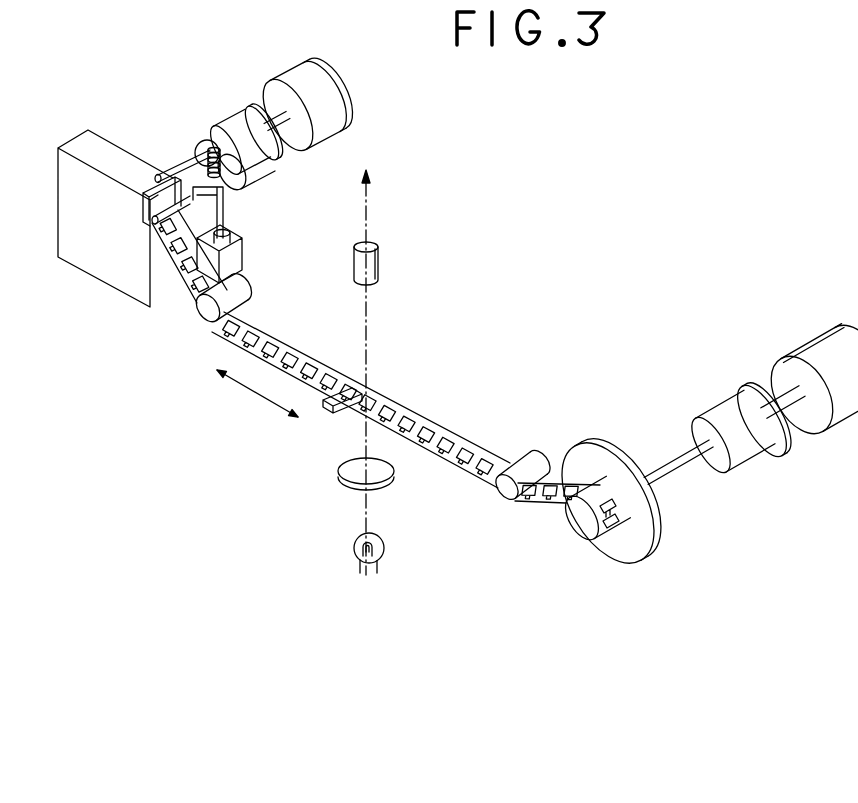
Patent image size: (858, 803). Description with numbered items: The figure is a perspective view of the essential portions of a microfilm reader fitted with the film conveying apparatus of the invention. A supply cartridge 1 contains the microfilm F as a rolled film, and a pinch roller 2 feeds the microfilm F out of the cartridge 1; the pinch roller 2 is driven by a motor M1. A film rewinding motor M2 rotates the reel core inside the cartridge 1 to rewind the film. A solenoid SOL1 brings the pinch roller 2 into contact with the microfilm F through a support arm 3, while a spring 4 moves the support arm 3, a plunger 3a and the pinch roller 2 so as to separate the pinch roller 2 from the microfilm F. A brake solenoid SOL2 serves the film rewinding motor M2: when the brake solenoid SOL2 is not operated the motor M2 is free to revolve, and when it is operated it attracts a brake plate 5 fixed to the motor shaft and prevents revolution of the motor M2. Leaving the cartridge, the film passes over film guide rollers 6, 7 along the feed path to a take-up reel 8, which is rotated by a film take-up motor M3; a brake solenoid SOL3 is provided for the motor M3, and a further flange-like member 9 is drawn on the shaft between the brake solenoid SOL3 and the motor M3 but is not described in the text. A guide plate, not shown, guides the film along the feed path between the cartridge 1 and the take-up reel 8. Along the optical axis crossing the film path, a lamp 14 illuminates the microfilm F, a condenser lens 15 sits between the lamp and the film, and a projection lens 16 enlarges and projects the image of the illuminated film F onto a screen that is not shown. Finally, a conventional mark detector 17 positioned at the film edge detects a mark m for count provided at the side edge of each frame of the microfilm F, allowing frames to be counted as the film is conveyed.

The supply cartridge 1 is at (113, 139).
The pinch roller 2 is at (148, 222).
The support arm 3 is at (227, 214).
The plunger 3a is at (232, 233).
The spring 4 is at (208, 148).
The brake plate 5 is at (250, 112).
The film guide roller 6 is at (205, 313).
The film guide roller 7 is at (510, 501).
The take-up reel 8 is at (659, 527).
The clutch flange 9 is at (757, 385).
The lamp 14 is at (354, 543).
The condenser lens 15 is at (396, 478).
The projection lens 16 is at (378, 268).
The mark detector 17 is at (335, 414).
The solenoid SOL1 is at (240, 258).
The brake solenoid SOL2 is at (236, 130).
The brake solenoid SOL3 is at (720, 403).
The motor M1 is at (262, 183).
The film rewinding motor M2 is at (366, 104).
The film take-up motor M3 is at (826, 333).
The microfilm F is at (423, 419).
The mark for count m is at (283, 371).